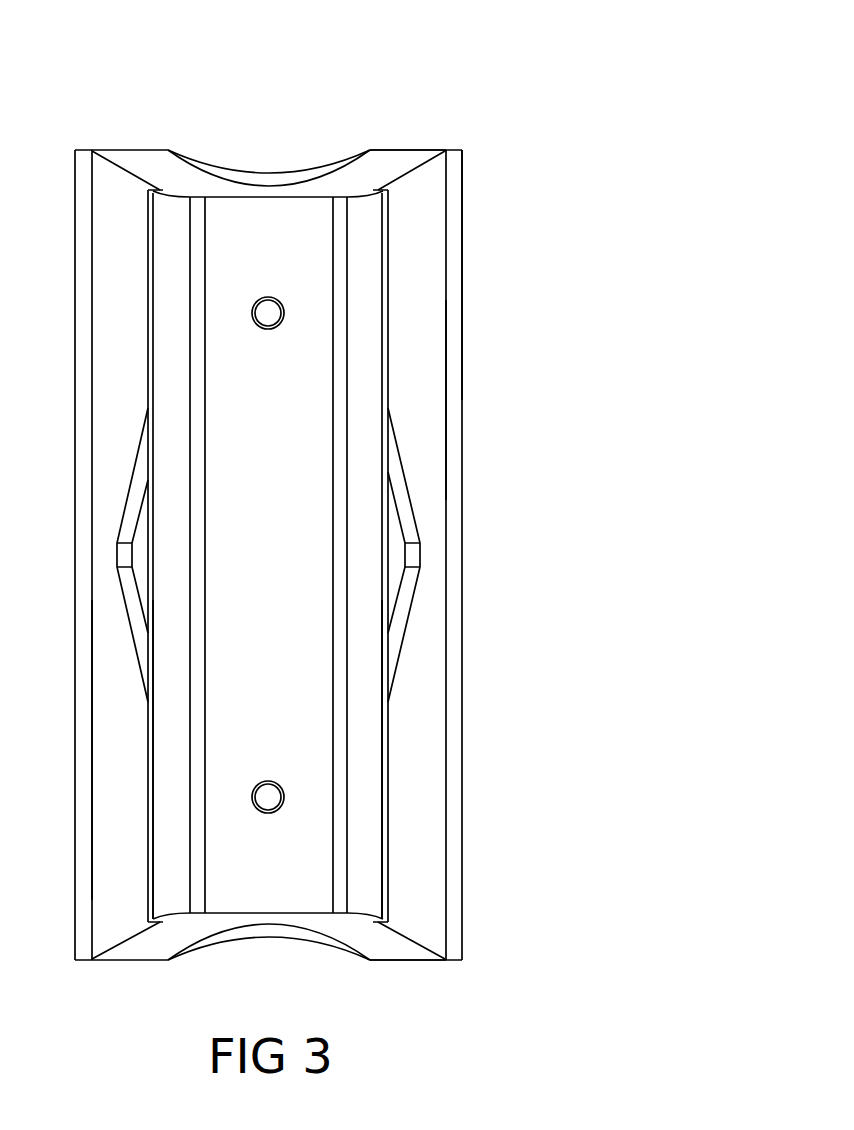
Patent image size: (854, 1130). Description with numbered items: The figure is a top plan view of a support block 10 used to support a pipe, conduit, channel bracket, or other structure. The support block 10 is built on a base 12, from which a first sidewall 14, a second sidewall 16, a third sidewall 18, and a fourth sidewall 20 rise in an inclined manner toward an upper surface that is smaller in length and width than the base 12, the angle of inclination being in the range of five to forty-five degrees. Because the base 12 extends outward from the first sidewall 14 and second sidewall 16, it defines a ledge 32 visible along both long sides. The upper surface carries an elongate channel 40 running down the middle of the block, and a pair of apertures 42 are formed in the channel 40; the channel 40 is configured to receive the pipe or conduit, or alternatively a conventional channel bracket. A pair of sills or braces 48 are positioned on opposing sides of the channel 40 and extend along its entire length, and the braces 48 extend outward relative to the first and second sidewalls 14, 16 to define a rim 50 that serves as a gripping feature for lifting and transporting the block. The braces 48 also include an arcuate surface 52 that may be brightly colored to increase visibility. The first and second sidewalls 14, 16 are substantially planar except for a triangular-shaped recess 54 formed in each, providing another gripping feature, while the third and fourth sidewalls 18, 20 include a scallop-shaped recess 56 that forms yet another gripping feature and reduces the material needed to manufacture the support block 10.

The support block 10 is at (510, 96).
The base 12 is at (463, 340).
The first sidewall 14 is at (425, 387).
The second sidewall 16 is at (117, 868).
The third sidewall 18 is at (393, 158).
The fourth sidewall 20 is at (378, 943).
The ledge 32 is at (455, 178).
The elongate channel 40 is at (233, 893).
The apertures 42 is at (268, 330).
The braces 48 is at (168, 318).
The rim 50 is at (160, 189).
The arcuate surface 52 is at (172, 742).
The triangular-shaped recess 54 is at (140, 555).
The scallop-shaped recess 56 is at (267, 178).